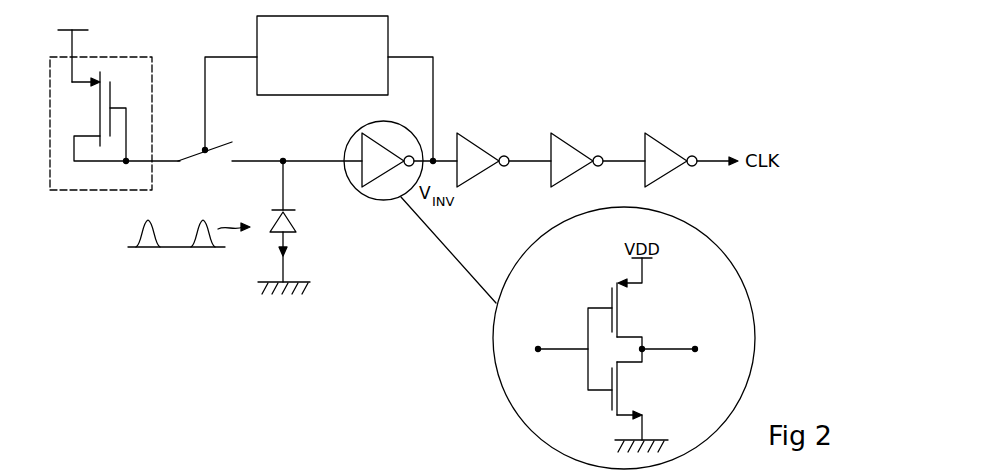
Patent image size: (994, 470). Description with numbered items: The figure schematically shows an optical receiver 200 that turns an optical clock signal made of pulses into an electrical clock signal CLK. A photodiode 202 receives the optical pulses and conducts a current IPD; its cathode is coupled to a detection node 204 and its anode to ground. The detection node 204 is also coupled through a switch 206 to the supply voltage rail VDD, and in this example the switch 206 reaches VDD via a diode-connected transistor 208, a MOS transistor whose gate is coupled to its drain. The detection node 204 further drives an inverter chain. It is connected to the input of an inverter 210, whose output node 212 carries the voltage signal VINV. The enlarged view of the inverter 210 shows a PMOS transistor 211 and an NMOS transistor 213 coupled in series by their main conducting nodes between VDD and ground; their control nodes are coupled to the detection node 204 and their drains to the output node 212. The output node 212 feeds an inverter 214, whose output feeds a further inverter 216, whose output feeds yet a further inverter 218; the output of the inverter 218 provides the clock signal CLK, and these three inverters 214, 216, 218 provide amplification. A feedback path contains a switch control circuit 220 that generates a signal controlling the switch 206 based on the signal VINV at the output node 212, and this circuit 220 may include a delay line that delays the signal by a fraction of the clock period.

The optical receiver 200 is at (678, 51).
The photodiode 202 is at (298, 218).
The detection node 204 is at (282, 163).
The switch 206 is at (230, 143).
The diode-connected transistor 208 is at (143, 55).
The inverter 210 is at (380, 157).
The PMOS transistor 211 is at (632, 312).
The output node 212 is at (434, 159).
The NMOS transistor 213 is at (632, 388).
The inverter 214 is at (475, 144).
The further inverter 216 is at (570, 144).
The further inverter 218 is at (663, 144).
The switch control circuit 220 is at (388, 33).